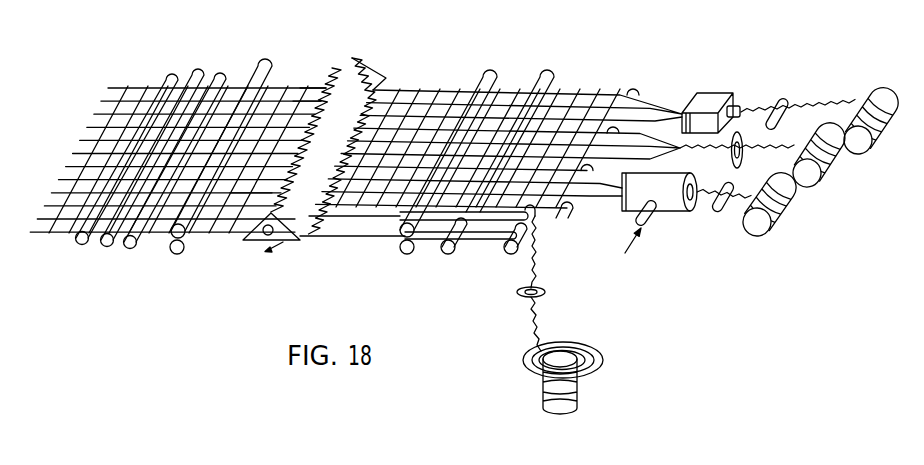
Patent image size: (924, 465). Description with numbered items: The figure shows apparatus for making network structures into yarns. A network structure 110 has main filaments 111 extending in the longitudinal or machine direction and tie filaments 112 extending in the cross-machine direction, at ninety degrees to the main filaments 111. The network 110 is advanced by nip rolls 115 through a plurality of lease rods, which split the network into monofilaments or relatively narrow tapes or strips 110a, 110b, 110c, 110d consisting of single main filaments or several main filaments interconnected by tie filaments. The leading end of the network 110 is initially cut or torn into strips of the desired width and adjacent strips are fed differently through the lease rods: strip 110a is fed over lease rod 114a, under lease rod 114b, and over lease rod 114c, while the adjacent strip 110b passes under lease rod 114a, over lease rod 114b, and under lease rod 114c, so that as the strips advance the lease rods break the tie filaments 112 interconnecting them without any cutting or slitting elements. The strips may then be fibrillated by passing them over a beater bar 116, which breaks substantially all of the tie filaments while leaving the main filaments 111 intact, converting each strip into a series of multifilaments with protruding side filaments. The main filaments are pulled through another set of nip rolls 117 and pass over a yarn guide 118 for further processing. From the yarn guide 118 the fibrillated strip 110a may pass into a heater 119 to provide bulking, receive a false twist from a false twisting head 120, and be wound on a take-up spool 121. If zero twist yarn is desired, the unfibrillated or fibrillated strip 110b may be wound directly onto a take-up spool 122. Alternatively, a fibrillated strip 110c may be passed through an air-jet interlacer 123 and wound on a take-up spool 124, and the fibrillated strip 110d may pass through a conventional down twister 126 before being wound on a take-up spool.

The network structure 110 is at (148, 78).
The strip 110a is at (298, 86).
The strip 110b is at (292, 131).
The strip 110c is at (235, 198).
The strip 110d is at (227, 236).
The main filaments 111 is at (82, 169).
The tie filaments 112 is at (92, 137).
The lease rod 114a is at (78, 245).
The lease rod 114b is at (108, 247).
The lease rod 114c is at (131, 248).
The nip rolls 115 is at (260, 71).
The beater bar 116 is at (384, 74).
The nip rolls 117 is at (488, 75).
The yarn guide 118 is at (550, 74).
The heater 119 is at (715, 95).
The false twisting head 120 is at (779, 98).
The take-up spool 121 is at (870, 92).
The take-up spool 122 is at (812, 176).
The air-jet interlacer 123 is at (673, 198).
The take-up spool 124 is at (763, 225).
The down twister 126 is at (566, 405).